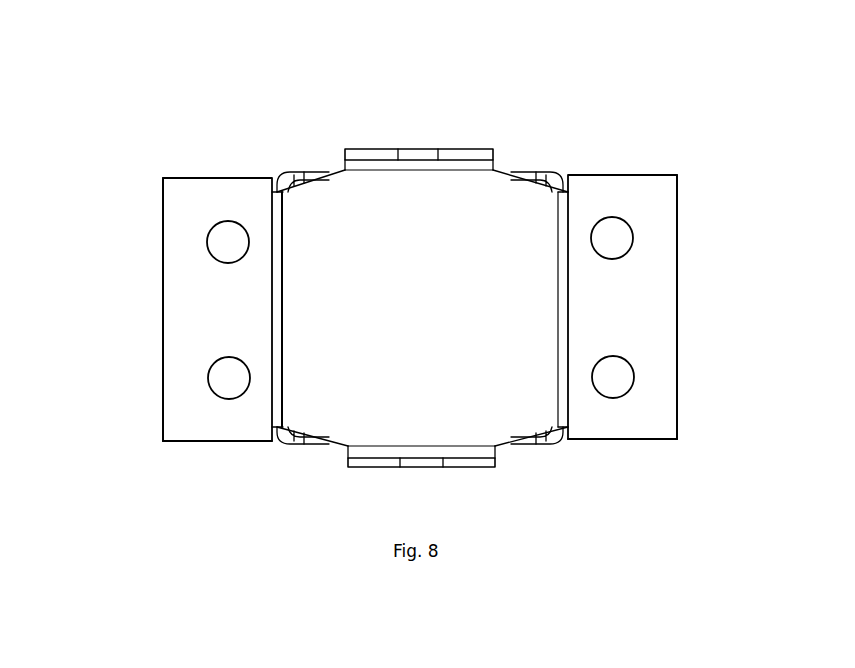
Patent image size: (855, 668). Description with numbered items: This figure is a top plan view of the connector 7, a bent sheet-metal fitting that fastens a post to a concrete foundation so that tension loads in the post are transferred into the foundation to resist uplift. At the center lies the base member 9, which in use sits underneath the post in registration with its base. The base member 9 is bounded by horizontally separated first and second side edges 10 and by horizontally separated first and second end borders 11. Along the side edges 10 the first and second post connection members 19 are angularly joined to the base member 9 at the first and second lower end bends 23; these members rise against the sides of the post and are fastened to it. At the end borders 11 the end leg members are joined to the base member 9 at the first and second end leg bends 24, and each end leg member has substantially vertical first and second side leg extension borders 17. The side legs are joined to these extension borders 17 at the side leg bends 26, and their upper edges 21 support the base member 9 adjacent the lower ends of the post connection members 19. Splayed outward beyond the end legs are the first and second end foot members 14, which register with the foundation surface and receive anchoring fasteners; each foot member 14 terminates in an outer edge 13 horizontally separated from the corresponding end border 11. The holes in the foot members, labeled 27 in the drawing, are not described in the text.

The connector 7 is at (218, 450).
The base member 9 is at (512, 207).
The first and second side edges 10 is at (326, 171).
The first and second end borders 11 is at (278, 220).
The outer edge 13 is at (163, 210).
The first and second end foot members 14 is at (180, 400).
The first and second side leg extension borders 17 is at (285, 190).
The first and second post connection members 19 is at (362, 140).
The upper edges 21 is at (305, 171).
The first and second lower end bends 23 is at (420, 160).
The first and second end leg bends 24 is at (278, 393).
The side leg bends 26 is at (280, 191).
The mounting hole 27 is at (208, 378).